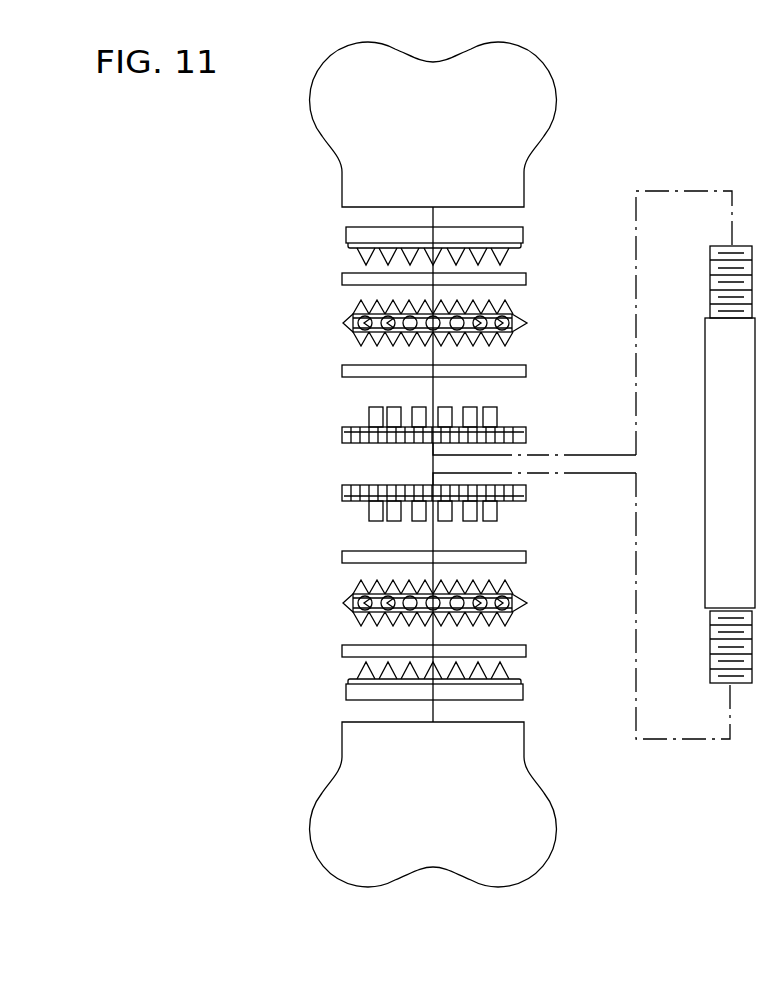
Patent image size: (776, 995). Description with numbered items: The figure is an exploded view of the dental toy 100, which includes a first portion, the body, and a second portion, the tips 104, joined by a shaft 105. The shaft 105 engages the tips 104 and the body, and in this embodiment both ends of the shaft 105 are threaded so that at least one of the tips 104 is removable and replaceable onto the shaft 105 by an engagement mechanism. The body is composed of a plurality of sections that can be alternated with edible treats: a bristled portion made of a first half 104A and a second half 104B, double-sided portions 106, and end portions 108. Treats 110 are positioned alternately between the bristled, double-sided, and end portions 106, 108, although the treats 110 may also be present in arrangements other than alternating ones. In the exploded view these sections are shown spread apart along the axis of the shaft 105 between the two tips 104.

The toy 100 is at (672, 105).
The tips 104 is at (574, 93).
The first half 104A is at (343, 433).
The second half 104B is at (343, 493).
The shaft 105 is at (707, 390).
The double-sided portions 106 is at (343, 323).
The end portions 108 is at (345, 238).
The treats 110 is at (343, 280).